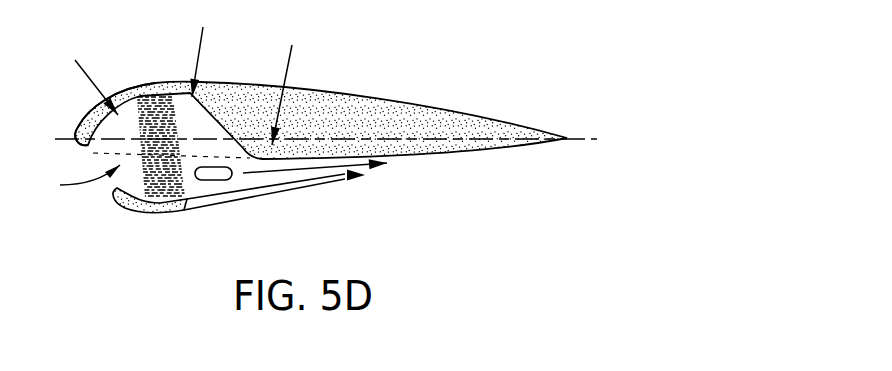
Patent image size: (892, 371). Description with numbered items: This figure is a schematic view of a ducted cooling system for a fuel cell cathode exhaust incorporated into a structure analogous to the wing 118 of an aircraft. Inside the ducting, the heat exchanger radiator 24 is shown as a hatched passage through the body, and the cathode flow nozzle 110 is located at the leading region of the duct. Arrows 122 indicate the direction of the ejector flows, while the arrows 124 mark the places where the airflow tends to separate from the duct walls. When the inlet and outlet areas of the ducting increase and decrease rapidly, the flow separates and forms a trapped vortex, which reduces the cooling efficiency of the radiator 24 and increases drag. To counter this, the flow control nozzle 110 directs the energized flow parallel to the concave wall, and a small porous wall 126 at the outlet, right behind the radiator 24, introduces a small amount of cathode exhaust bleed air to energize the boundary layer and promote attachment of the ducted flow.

The heat exchanger radiator 24 is at (150, 92).
The cathode flow nozzle 110 is at (64, 136).
The wing 118 is at (403, 83).
The ejector flow arrows 122 is at (92, 184).
The airflow separation arrows 124 is at (97, 78).
The porous wall 126 is at (213, 181).